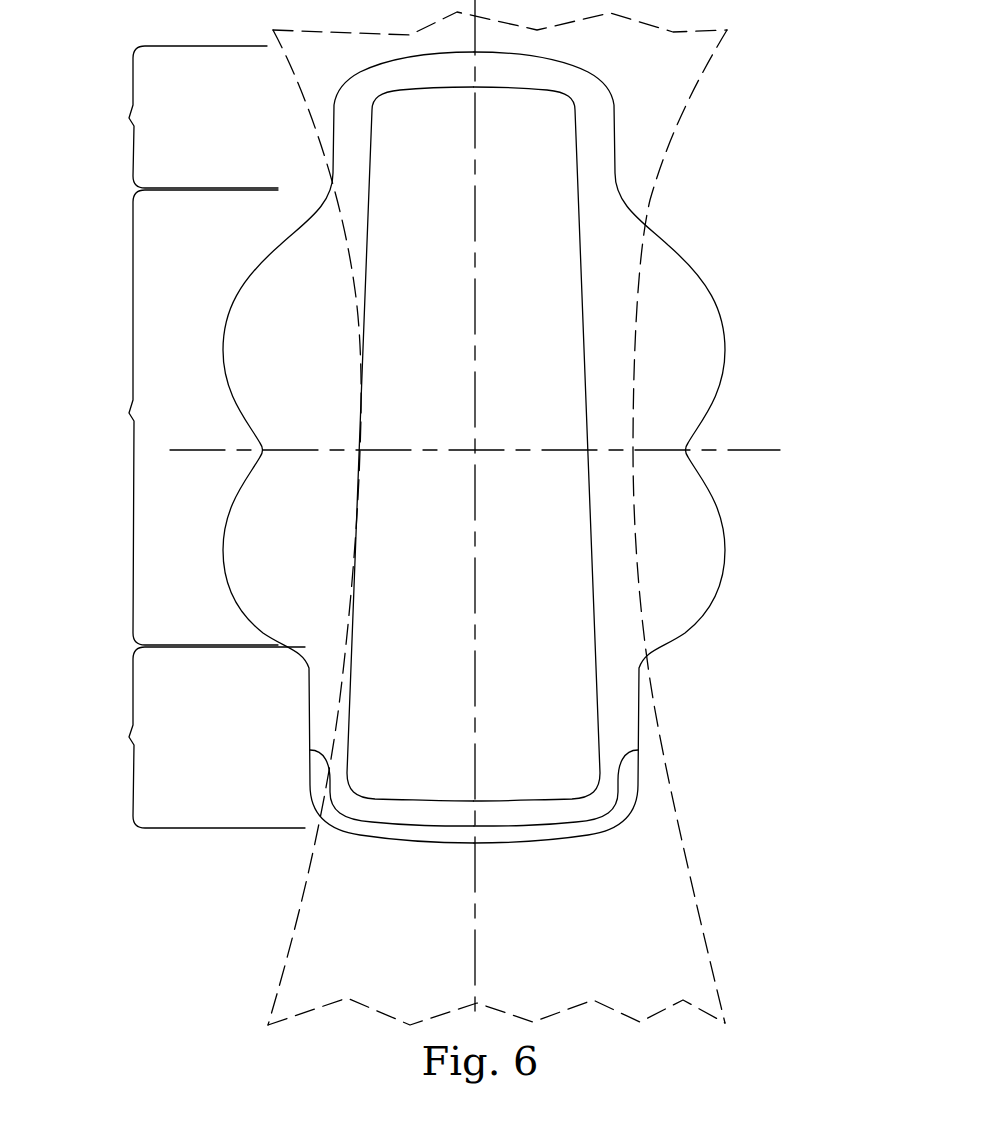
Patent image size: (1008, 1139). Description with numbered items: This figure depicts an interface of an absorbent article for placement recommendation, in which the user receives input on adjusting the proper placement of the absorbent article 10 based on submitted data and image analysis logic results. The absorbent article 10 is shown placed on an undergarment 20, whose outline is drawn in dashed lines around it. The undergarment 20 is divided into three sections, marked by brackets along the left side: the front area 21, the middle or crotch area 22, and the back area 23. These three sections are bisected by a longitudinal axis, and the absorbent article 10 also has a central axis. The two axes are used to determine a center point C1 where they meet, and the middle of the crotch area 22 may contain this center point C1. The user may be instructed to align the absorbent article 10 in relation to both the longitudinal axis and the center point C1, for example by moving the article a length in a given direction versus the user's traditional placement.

The absorbent article 10 is at (738, 163).
The undergarment 20 is at (655, 197).
The front area 21 is at (183, 117).
The middle or crotch area 22 is at (183, 417).
The back area 23 is at (197, 737).
The center point C1 is at (478, 444).